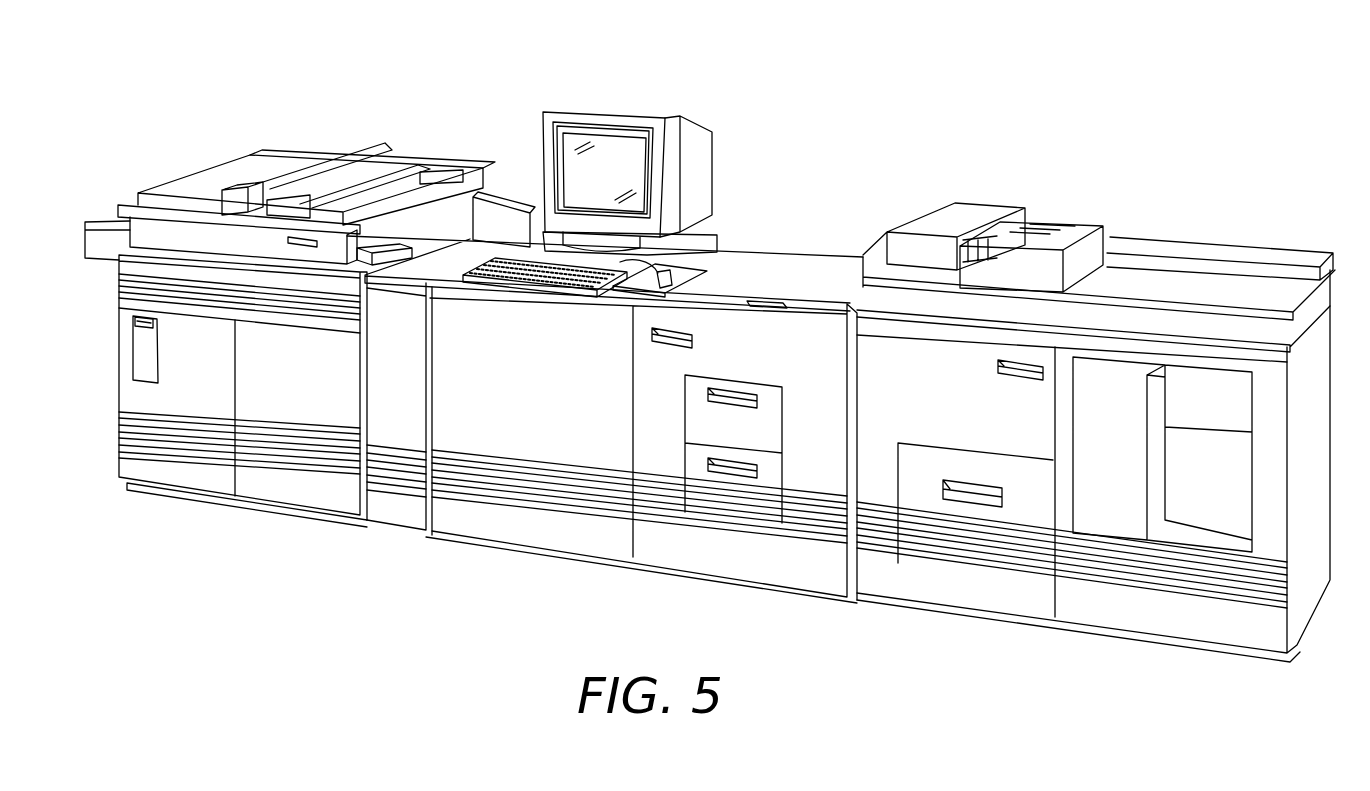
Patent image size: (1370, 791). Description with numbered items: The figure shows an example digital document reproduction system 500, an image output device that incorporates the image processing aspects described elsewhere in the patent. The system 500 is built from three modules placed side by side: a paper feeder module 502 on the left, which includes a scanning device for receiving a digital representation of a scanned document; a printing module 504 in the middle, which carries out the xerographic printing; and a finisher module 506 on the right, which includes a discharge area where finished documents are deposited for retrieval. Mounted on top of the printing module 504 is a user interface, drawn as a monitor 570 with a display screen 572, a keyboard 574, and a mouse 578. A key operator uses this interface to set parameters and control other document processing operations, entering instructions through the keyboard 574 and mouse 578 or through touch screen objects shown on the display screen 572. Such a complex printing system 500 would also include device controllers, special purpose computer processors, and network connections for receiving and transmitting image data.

The digital document reproduction system 500 is at (798, 88).
The paper feeder module 502 is at (347, 144).
The printing module 504 is at (818, 223).
The finisher module 506 is at (1223, 223).
The user interface monitor 570 is at (607, 104).
The display screen 572 is at (568, 160).
The keyboard 574 is at (550, 283).
The mouse 578 is at (648, 292).